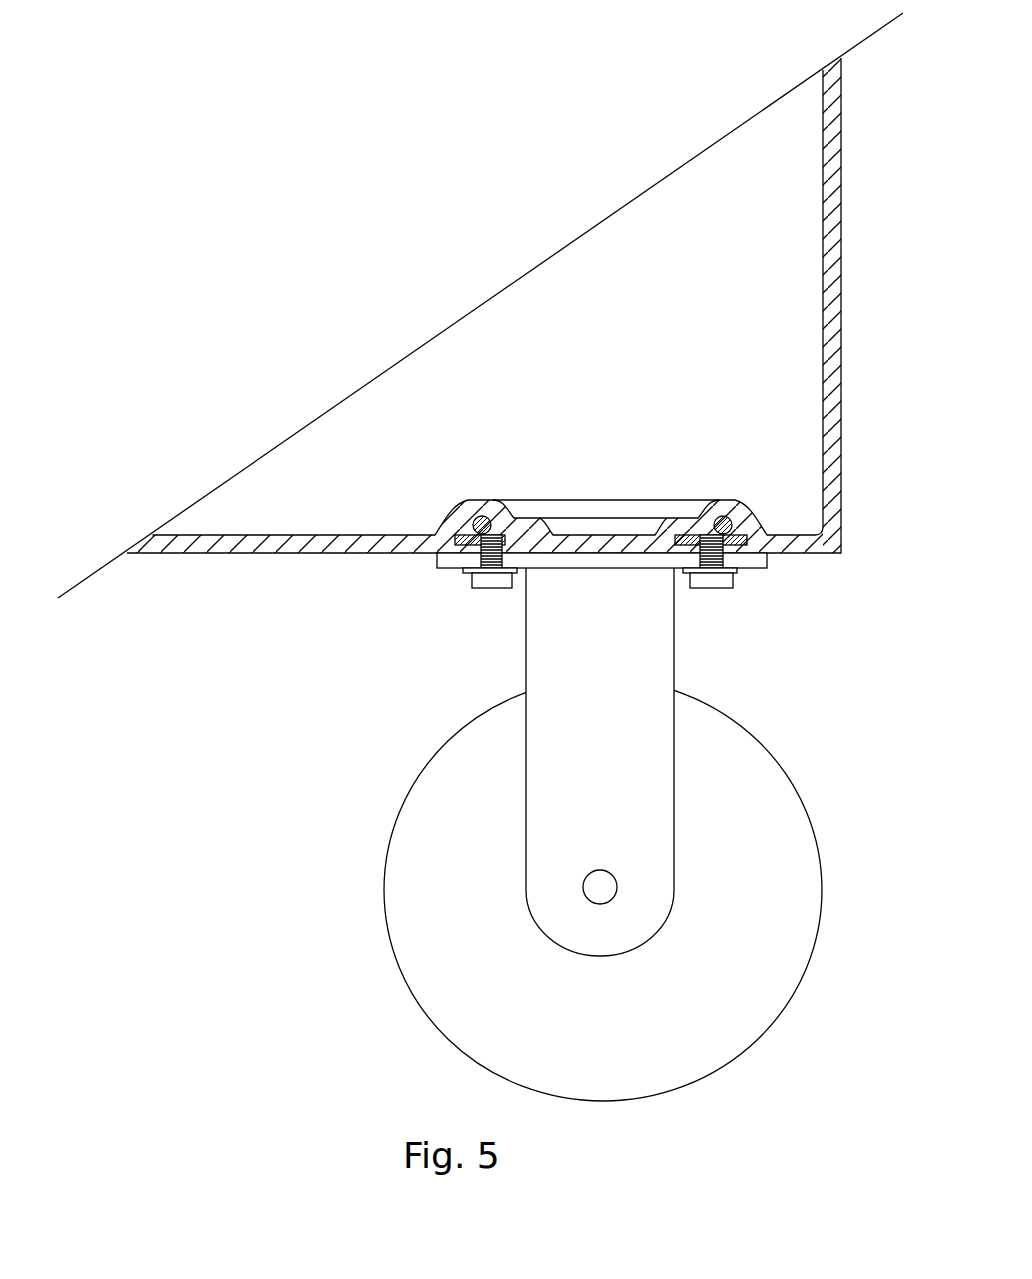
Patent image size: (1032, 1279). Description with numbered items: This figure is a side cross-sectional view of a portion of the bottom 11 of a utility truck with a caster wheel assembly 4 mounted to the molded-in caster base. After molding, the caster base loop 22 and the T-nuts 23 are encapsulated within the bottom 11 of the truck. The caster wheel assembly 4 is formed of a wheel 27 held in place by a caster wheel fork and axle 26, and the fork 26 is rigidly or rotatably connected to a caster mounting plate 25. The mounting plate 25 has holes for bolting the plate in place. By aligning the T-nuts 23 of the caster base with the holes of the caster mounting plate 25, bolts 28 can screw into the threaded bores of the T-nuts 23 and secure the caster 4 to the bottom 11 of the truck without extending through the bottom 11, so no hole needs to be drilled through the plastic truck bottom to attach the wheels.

The caster wheel assembly 4 is at (484, 757).
The bottom of the truck 11 is at (265, 553).
The caster base loop 22 is at (477, 527).
The T-nuts 23 is at (513, 530).
The caster mounting plate 25 is at (752, 560).
The caster wheel fork and axle 26 is at (629, 752).
The wheel 27 is at (470, 922).
The bolts 28 is at (485, 580).